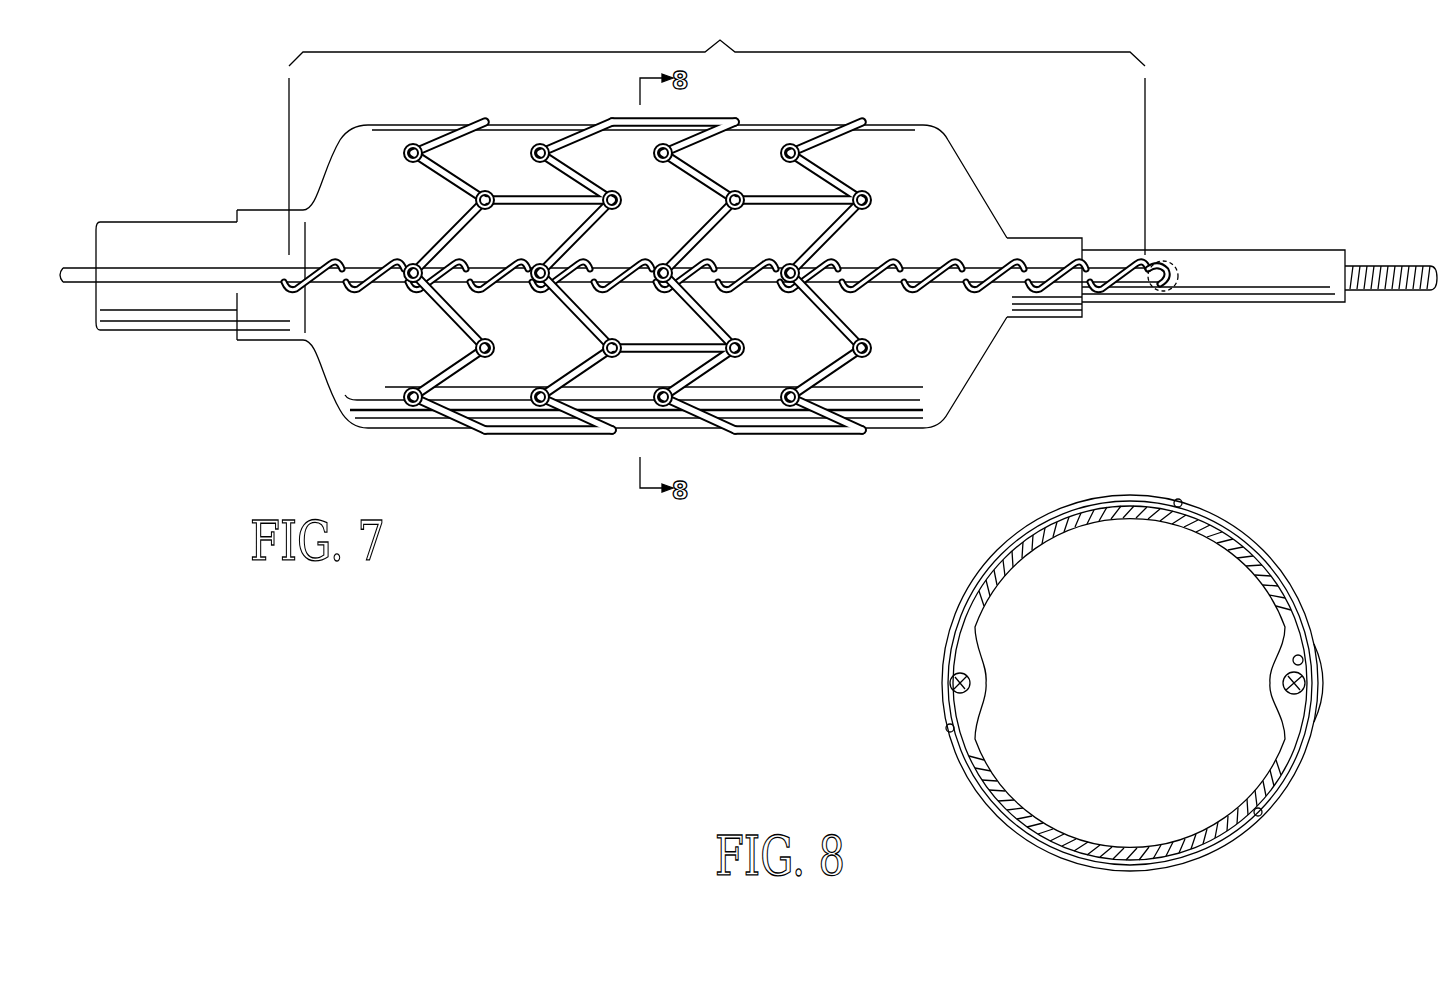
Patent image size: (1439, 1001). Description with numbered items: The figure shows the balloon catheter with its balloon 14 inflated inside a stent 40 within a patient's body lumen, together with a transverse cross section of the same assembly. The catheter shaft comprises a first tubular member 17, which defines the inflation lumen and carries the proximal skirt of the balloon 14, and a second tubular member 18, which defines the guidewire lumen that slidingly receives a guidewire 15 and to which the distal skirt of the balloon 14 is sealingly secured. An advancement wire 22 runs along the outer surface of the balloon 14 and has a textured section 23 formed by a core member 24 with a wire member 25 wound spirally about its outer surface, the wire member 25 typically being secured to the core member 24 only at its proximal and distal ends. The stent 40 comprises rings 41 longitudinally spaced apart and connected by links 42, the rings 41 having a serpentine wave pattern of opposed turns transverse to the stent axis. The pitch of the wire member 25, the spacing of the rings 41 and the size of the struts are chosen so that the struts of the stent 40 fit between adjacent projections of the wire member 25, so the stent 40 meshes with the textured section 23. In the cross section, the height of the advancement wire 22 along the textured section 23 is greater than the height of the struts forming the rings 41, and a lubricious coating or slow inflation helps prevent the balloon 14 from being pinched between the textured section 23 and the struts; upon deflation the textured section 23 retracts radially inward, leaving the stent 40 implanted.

In FIG. 7, the balloon 14 is at (312, 372).
In FIG. 8, the balloon 14 is at (1050, 858).
In FIG. 7, the guidewire 15 is at (1395, 266).
In FIG. 8, the guidewire 15 is at (949, 684).
In FIG. 7, the first tubular member 17 is at (182, 333).
In FIG. 7, the second tubular member 18 is at (1225, 250).
In FIG. 7, the advancement wire 22 is at (163, 266).
In FIG. 7, the textured section 23 is at (717, 130).
In FIG. 7, the core member 24 is at (912, 264).
In FIG. 8, the core member 24 is at (1330, 692).
In FIG. 7, the wire member 25 is at (921, 292).
In FIG. 8, the wire member 25 is at (1326, 666).
In FIG. 7, the stent 40 is at (711, 286).
In FIG. 8, the stent 40 is at (1318, 537).
In FIG. 7, the rings 41 is at (447, 137).
In FIG. 8, the rings 41 is at (986, 560).
In FIG. 7, the links 42 is at (703, 122).
In FIG. 8, the links 42 is at (1181, 500).